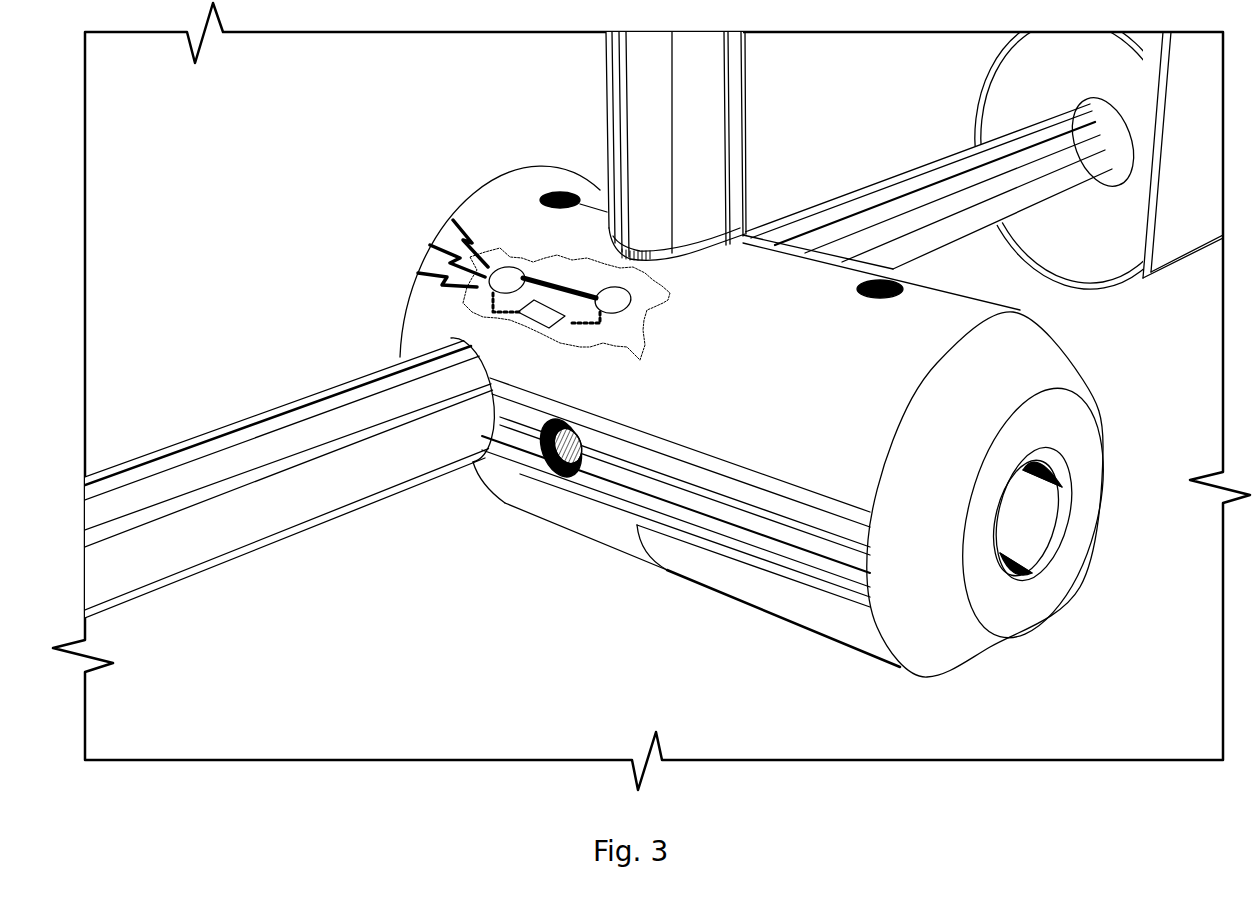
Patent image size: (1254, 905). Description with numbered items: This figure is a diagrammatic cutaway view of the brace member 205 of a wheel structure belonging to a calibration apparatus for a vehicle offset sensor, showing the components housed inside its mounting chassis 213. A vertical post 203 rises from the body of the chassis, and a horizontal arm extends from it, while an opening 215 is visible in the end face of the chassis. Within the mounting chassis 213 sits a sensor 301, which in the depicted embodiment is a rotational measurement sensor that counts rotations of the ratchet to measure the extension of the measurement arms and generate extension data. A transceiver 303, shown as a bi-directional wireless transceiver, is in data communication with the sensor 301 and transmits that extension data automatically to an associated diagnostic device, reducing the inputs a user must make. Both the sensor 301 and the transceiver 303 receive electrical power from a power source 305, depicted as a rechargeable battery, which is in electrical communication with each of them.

The vertical post 203 is at (733, 67).
The brace member 205 is at (893, 180).
The mounting chassis 213 is at (537, 503).
The opening 215 is at (1088, 478).
The sensor 301 is at (632, 303).
The transceiver 303 is at (513, 267).
The power source 305 is at (557, 325).